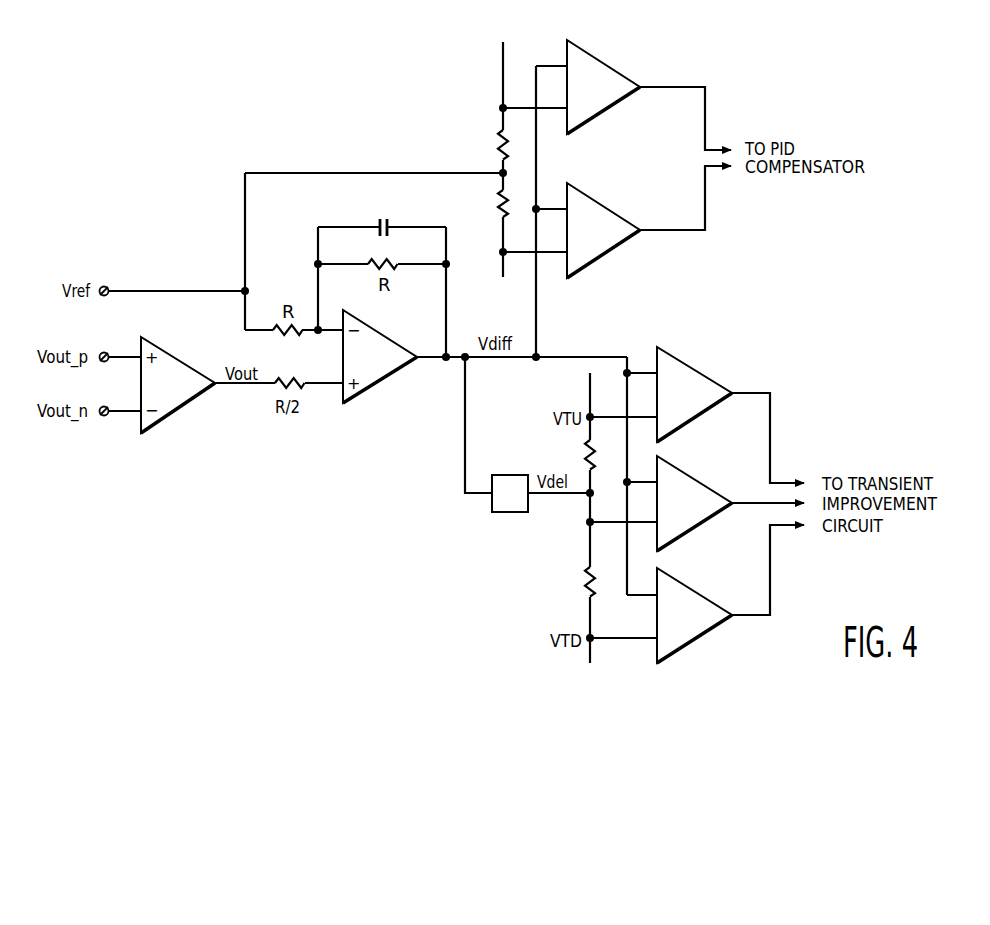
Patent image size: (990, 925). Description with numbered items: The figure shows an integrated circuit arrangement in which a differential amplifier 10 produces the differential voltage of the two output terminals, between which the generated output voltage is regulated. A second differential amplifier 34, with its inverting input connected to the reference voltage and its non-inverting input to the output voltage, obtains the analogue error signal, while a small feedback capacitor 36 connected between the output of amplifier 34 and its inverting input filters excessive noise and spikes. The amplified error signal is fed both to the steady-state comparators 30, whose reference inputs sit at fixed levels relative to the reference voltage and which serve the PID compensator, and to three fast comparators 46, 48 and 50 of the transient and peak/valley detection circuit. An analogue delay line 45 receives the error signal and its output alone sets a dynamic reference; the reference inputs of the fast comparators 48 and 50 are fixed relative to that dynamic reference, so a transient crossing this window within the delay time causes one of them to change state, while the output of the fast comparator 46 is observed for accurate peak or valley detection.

The differential amplifier 10 is at (173, 412).
The differential amplifier 34 is at (375, 390).
The feedback capacitor 36 is at (389, 219).
The steady-state comparators 30 is at (604, 203).
The fast comparator 48 is at (688, 364).
The fast comparator 46 is at (706, 478).
The fast comparator 50 is at (703, 591).
The analogue delay line 45 is at (490, 507).